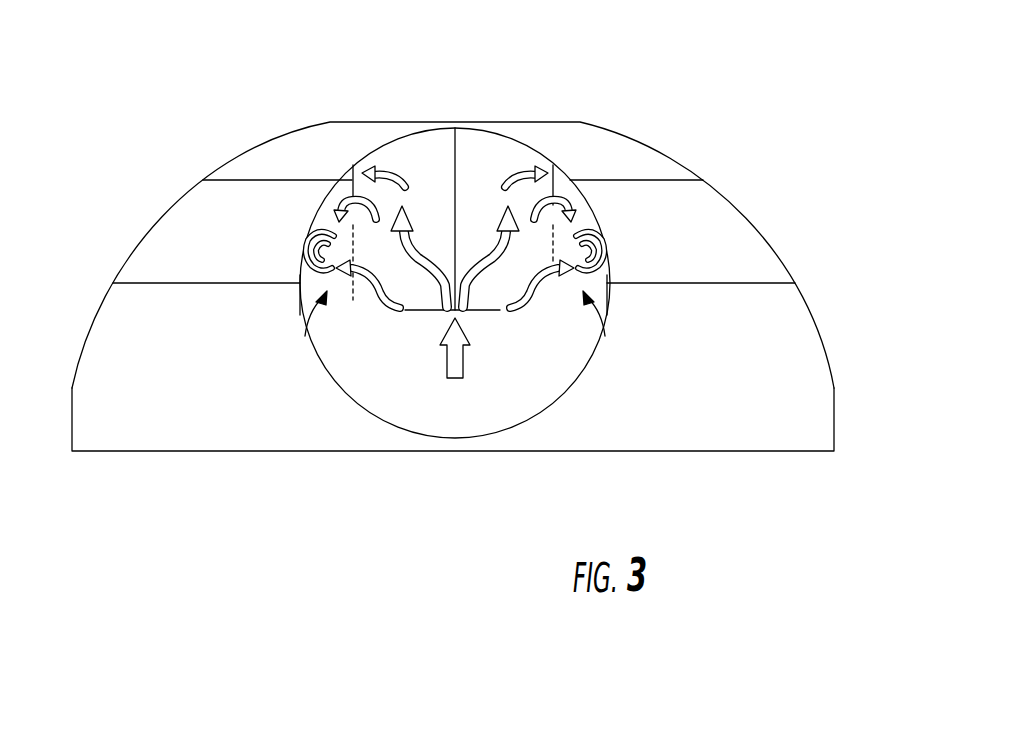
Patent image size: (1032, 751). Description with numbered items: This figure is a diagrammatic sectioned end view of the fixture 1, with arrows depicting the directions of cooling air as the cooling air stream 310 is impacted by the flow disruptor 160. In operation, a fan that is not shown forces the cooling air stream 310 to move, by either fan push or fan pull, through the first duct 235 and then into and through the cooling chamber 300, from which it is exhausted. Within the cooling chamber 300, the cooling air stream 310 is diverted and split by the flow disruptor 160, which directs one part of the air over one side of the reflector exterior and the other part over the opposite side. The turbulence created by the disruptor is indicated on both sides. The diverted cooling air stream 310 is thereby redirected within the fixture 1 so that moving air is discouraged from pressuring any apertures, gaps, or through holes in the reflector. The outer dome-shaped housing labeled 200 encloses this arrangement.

The fixture 1 is at (122, 181).
The flow disruptor 160 is at (435, 191).
The dome cover 200 is at (763, 236).
The first duct 235 is at (518, 151).
The cooling chamber 300 is at (553, 363).
The cooling air stream 310 is at (454, 367).